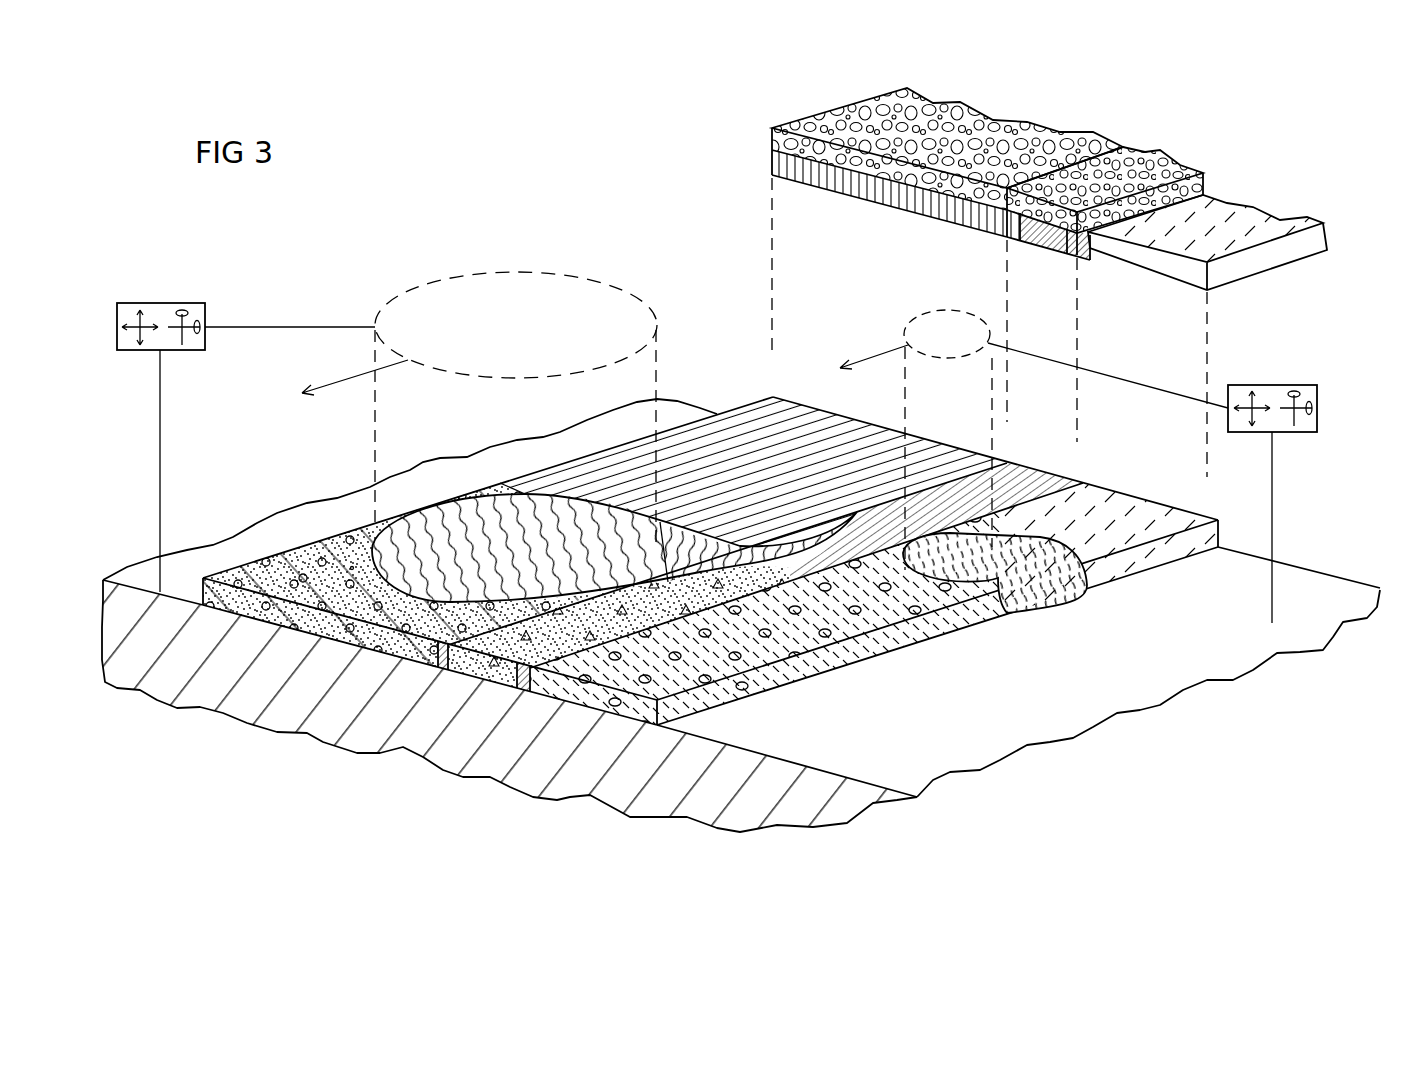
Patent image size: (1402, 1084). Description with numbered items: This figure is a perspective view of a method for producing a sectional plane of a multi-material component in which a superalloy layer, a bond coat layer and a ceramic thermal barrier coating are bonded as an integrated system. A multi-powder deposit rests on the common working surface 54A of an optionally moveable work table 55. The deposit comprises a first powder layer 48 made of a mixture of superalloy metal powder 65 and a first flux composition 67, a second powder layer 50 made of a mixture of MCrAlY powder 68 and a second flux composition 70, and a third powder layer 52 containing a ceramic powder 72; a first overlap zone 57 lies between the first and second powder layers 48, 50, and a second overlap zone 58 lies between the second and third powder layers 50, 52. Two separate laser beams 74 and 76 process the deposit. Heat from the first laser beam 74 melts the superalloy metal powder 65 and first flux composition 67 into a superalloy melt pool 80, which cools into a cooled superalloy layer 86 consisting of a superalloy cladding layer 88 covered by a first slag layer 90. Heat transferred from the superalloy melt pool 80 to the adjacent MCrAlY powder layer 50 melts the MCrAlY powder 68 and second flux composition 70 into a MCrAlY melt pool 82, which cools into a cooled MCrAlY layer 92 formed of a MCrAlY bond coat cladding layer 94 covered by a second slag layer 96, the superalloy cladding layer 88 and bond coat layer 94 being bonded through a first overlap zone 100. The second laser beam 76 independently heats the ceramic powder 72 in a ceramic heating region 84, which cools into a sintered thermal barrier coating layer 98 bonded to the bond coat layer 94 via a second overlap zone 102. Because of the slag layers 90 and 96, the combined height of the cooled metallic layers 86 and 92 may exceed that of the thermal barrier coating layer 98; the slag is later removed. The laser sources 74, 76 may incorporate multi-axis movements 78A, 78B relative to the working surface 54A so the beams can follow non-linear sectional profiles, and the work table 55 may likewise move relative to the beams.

The first powder layer 48 is at (258, 576).
The second powder layer 50 is at (481, 668).
The third powder layer 52 is at (627, 703).
The working surface 54A is at (988, 735).
The work table 55 is at (273, 717).
The first overlap zone 57 is at (451, 672).
The second overlap zone 58 is at (533, 692).
The superalloy metal powder 65 is at (304, 577).
The first flux composition 67 is at (353, 567).
The MCrAlY powder 68 is at (534, 651).
The second flux composition 70 is at (547, 613).
The ceramic powder 72 is at (745, 690).
The first laser beam 74 is at (420, 293).
The second laser beam 76 is at (912, 327).
The multi-axis movement 78A is at (160, 303).
The multi-axis movement 78B is at (1277, 385).
The superalloy melt pool 80 is at (450, 530).
The MCrAlY melt pool 82 is at (793, 560).
The ceramic heating region 84 is at (1047, 593).
The cooled superalloy layer 86 is at (742, 450).
The superalloy cladding layer 88 is at (847, 183).
The first slag layer 90 is at (967, 127).
The cooled MCrAlY layer 92 is at (1017, 480).
The MCrAlY bond coat cladding layer 94 is at (1058, 240).
The second slag layer 96 is at (1143, 160).
The sintered thermal barrier coating layer 98 is at (1230, 220).
The first overlap zone 100 is at (1020, 240).
The second overlap zone 102 is at (1090, 258).